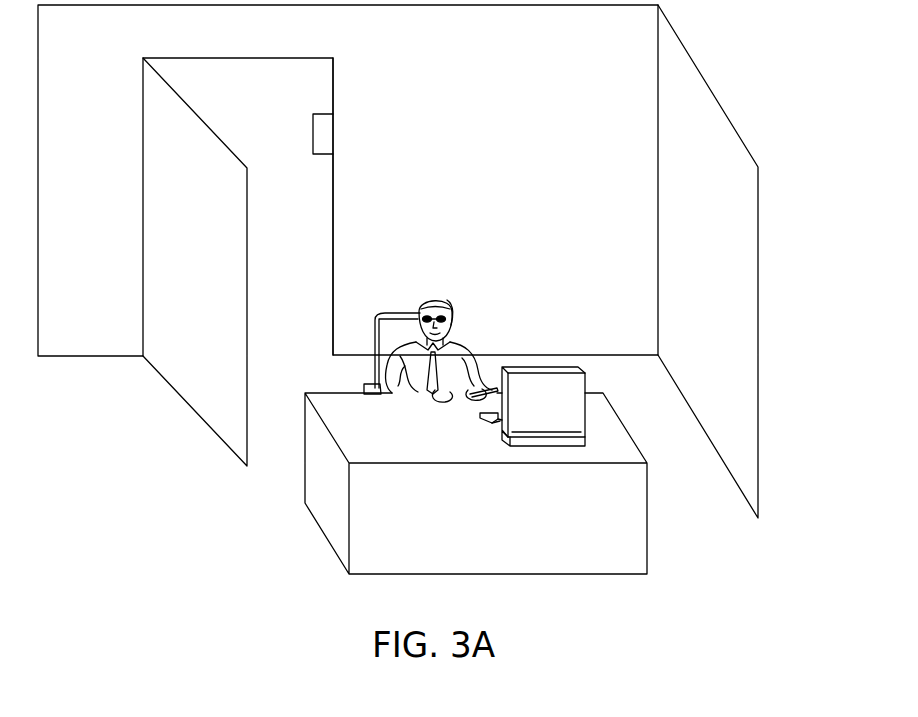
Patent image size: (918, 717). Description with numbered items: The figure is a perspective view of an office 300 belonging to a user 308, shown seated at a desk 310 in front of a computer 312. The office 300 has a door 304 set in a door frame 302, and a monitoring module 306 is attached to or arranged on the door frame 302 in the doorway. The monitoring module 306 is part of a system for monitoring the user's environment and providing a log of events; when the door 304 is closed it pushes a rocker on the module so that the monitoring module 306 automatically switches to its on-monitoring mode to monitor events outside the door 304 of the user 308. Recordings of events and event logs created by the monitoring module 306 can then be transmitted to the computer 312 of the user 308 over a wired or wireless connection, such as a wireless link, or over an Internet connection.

The office 300 is at (722, 44).
The door frame 302 is at (348, 262).
The door 304 is at (217, 305).
The monitoring module 306 is at (325, 133).
The user 308 is at (437, 282).
The desk 310 is at (604, 374).
The computer 312 is at (489, 365).